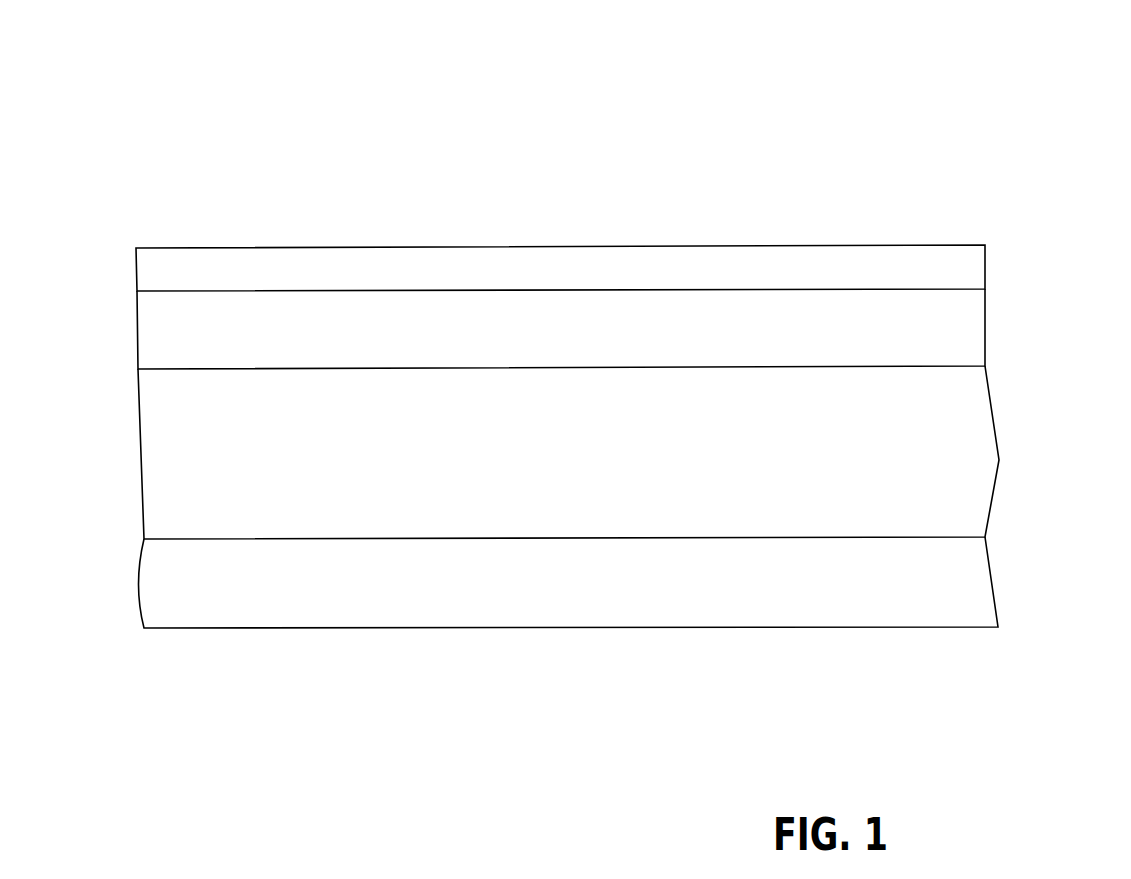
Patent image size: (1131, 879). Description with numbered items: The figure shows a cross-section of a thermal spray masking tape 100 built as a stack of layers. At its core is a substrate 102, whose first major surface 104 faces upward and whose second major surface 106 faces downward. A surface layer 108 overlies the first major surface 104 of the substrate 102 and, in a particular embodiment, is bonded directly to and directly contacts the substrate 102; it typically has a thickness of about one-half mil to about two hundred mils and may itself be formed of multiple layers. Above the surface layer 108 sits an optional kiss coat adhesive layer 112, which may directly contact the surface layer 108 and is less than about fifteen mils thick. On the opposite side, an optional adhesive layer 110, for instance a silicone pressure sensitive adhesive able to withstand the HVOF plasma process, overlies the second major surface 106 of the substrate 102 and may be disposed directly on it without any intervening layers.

The thermal spray masking tape 100 is at (408, 148).
The substrate 102 is at (958, 448).
The interface / boundary 104 is at (839, 366).
The second major surface 106 is at (735, 540).
The surface layer 108 is at (958, 323).
The adhesive layer 110 is at (972, 590).
The kiss coat adhesive layer 112 is at (970, 264).